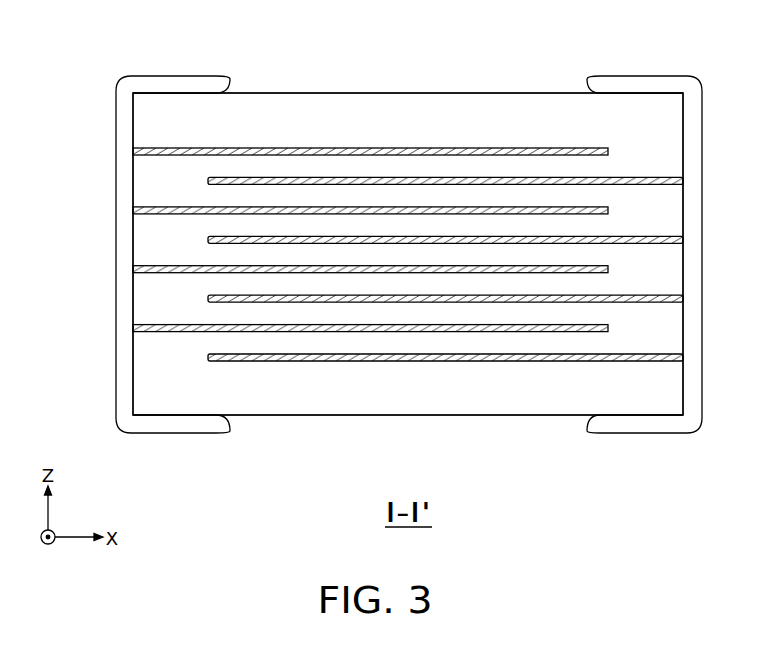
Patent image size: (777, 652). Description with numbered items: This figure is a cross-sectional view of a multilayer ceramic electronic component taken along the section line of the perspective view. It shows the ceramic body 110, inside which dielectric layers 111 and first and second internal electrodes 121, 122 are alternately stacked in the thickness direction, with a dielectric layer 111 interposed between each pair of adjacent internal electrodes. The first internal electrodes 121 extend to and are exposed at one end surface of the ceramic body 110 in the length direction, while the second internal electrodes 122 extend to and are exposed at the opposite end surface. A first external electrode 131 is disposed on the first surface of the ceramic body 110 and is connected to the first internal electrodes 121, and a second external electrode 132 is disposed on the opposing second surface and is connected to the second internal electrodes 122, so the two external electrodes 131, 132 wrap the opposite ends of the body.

The ceramic body 110 is at (392, 93).
The dielectric layers 111 is at (492, 342).
The first internal electrodes 121 is at (345, 331).
The second internal electrodes 122 is at (387, 360).
The first external electrode 131 is at (173, 80).
The second external electrode 132 is at (645, 78).